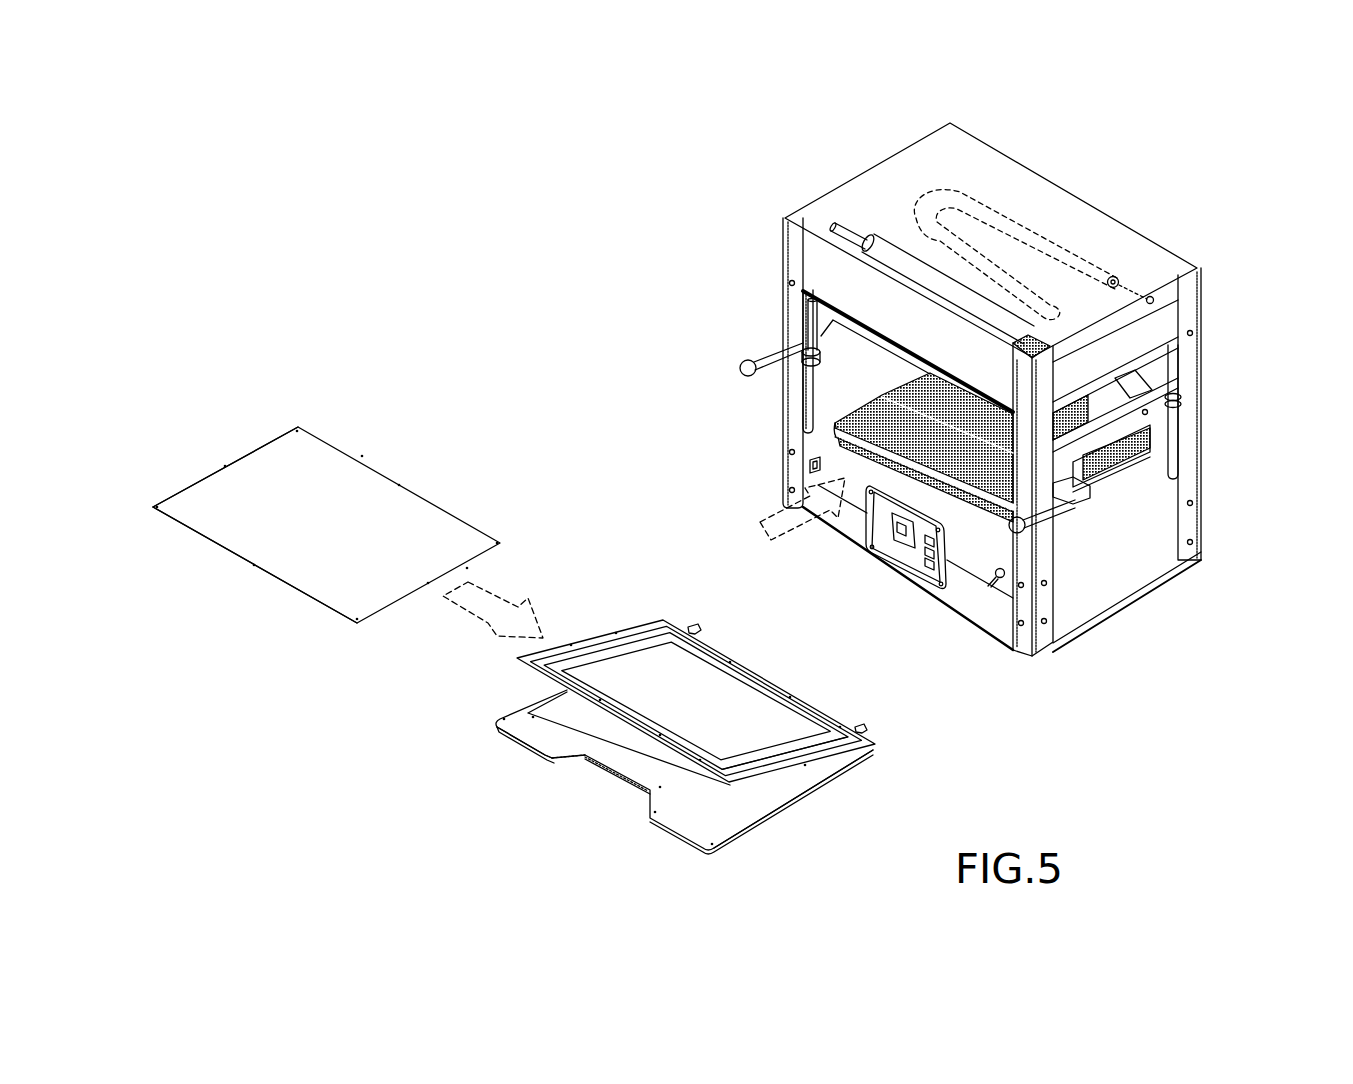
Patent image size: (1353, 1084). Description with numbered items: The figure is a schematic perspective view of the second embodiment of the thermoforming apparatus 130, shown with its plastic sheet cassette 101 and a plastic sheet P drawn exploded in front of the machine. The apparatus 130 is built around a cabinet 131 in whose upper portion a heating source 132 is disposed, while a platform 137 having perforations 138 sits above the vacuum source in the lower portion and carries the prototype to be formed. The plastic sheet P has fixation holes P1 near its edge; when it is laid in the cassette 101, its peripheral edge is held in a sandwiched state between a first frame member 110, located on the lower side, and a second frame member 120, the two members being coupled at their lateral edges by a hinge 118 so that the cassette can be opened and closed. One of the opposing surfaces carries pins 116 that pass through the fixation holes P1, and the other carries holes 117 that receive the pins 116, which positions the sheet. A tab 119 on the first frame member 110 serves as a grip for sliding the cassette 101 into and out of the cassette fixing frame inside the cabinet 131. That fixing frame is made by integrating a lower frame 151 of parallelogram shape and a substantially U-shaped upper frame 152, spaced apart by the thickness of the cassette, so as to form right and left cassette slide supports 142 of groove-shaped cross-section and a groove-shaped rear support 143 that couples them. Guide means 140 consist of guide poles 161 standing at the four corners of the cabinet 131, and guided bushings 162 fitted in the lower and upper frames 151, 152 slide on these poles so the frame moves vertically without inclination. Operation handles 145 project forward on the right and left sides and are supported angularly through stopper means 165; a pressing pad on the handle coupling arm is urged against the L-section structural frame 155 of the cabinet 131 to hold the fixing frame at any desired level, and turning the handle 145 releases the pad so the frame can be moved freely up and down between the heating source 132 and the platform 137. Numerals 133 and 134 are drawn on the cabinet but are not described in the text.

The plastic sheet P is at (268, 412).
The fixation holes P1 is at (250, 455).
The plastic sheet cassette 101 is at (612, 580).
The first frame member 110 is at (528, 707).
The pins 116 is at (770, 802).
The holes 117 is at (775, 765).
The hinge 118 is at (693, 626).
The tab 119 is at (533, 728).
The second frame member 120 is at (607, 632).
The thermoforming apparatus 130 is at (775, 190).
The cabinet 131 is at (873, 212).
The heating source 132 is at (945, 205).
The control panel 133 is at (900, 520).
The switch 134 is at (810, 463).
The platform 137 is at (990, 513).
The perforations 138 is at (973, 490).
The guide means 140 is at (670, 243).
The cassette slide supports 142 is at (1175, 405).
The rear support 143 is at (1147, 385).
The operation handles 145 is at (773, 350).
The lower frame 151 is at (1127, 445).
The upper frame 152 is at (1147, 420).
The structural frame 155 is at (795, 423).
The guide poles 161 is at (810, 328).
The guided bushings 162 is at (807, 352).
The stopper means 165 is at (1083, 493).